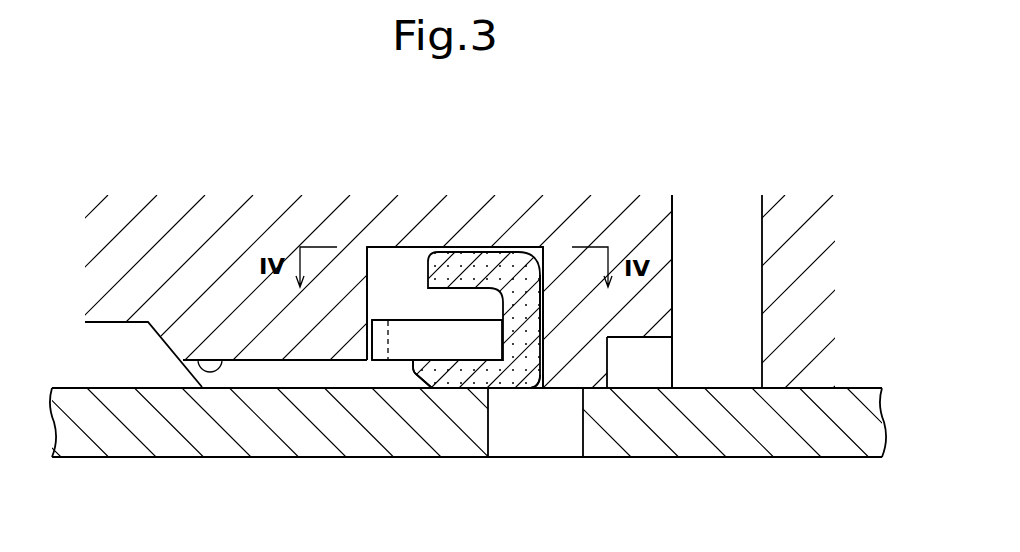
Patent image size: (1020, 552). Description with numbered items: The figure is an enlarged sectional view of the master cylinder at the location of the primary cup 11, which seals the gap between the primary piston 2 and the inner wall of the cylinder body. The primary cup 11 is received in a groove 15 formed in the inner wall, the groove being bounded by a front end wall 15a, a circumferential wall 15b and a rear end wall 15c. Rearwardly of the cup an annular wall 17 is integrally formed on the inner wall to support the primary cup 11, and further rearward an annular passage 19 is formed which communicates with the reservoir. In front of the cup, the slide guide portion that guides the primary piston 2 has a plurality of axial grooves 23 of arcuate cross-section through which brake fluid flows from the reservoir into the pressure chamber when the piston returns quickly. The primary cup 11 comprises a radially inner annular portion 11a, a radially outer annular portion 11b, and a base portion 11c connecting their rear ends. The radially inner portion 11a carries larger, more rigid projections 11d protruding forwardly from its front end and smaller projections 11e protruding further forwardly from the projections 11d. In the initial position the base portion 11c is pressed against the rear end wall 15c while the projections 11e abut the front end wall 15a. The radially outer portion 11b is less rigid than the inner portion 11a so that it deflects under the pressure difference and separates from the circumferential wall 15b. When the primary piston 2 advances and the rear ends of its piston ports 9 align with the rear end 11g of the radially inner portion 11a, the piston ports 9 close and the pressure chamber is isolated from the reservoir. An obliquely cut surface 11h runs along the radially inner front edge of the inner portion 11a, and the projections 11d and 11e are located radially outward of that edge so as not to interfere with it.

The primary piston 2 is at (858, 410).
The piston port 9 is at (583, 437).
The primary cup 11 is at (451, 388).
The radially inner annular portion 11a is at (495, 373).
The radially outer annular portion 11b is at (484, 258).
The base portion 11c is at (545, 290).
The projections 11d is at (400, 348).
The projections 11e is at (372, 338).
The rear end 11g is at (522, 388).
The obliquely cut surface 11h is at (413, 370).
The groove 15 is at (411, 250).
The front end wall 15a is at (368, 284).
The circumferential wall 15b is at (534, 248).
The rear end wall 15c is at (542, 342).
The annular wall 17 is at (557, 352).
The annular passage 19 is at (653, 353).
The axial grooves 23 is at (186, 360).